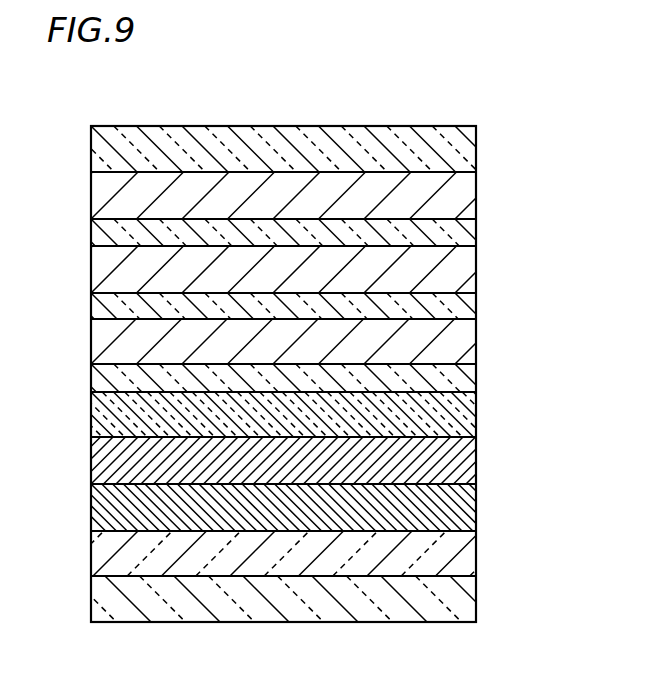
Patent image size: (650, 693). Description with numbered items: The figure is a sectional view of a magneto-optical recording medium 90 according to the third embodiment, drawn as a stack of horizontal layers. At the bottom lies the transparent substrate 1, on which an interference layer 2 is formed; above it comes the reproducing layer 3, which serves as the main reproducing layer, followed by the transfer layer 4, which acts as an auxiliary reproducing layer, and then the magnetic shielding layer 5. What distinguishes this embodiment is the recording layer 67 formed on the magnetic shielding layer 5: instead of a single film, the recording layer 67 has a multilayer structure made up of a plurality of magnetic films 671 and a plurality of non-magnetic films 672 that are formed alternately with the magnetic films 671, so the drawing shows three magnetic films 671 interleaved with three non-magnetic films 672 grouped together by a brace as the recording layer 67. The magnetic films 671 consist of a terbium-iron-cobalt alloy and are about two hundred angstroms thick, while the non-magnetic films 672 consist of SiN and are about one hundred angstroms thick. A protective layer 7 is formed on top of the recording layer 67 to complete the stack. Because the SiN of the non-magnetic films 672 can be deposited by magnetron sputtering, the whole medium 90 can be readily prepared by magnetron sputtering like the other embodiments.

The magneto-optical recording medium 90 is at (467, 106).
The protective layer 7 is at (468, 145).
The recording layer 67 is at (315, 282).
The magnetic films 671 is at (468, 197).
The non-magnetic films 672 is at (468, 235).
The magnetic shielding layer 5 is at (468, 421).
The transfer layer 4 is at (468, 464).
The reproducing layer 3 is at (468, 510).
The interference layer 2 is at (468, 555).
The transparent substrate 1 is at (468, 602).